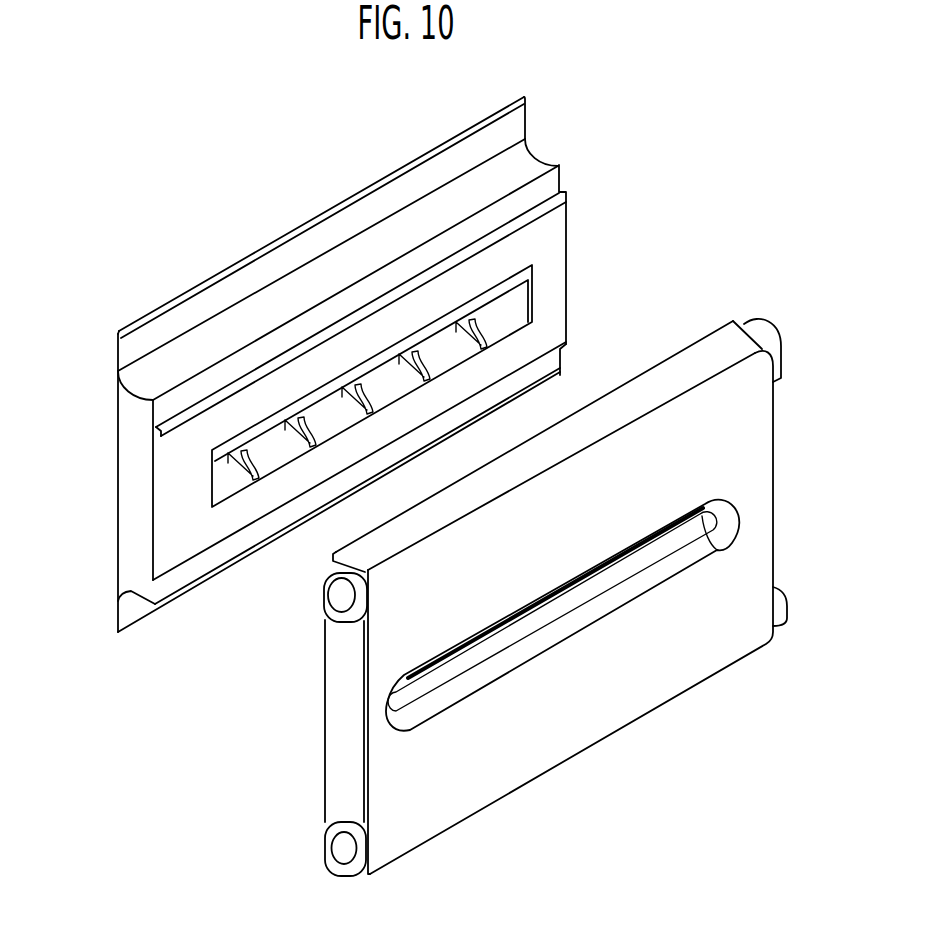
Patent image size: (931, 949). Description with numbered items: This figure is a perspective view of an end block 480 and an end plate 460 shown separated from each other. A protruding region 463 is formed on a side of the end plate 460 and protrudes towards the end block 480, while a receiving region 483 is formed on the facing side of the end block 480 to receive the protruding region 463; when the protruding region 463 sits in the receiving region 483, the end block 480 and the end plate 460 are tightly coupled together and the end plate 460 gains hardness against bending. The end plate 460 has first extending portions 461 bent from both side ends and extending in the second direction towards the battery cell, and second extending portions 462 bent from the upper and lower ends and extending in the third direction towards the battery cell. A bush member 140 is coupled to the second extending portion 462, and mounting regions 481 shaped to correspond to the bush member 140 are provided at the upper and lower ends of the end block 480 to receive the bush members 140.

The bush member 140 is at (347, 873).
The end plate 460 is at (536, 615).
The first extending portion 461 is at (335, 705).
The second extending portion 462 is at (685, 357).
The protruding region 463 is at (720, 517).
The end block 480 is at (323, 364).
The mounting region 481 is at (387, 197).
The receiving region 483 is at (522, 312).